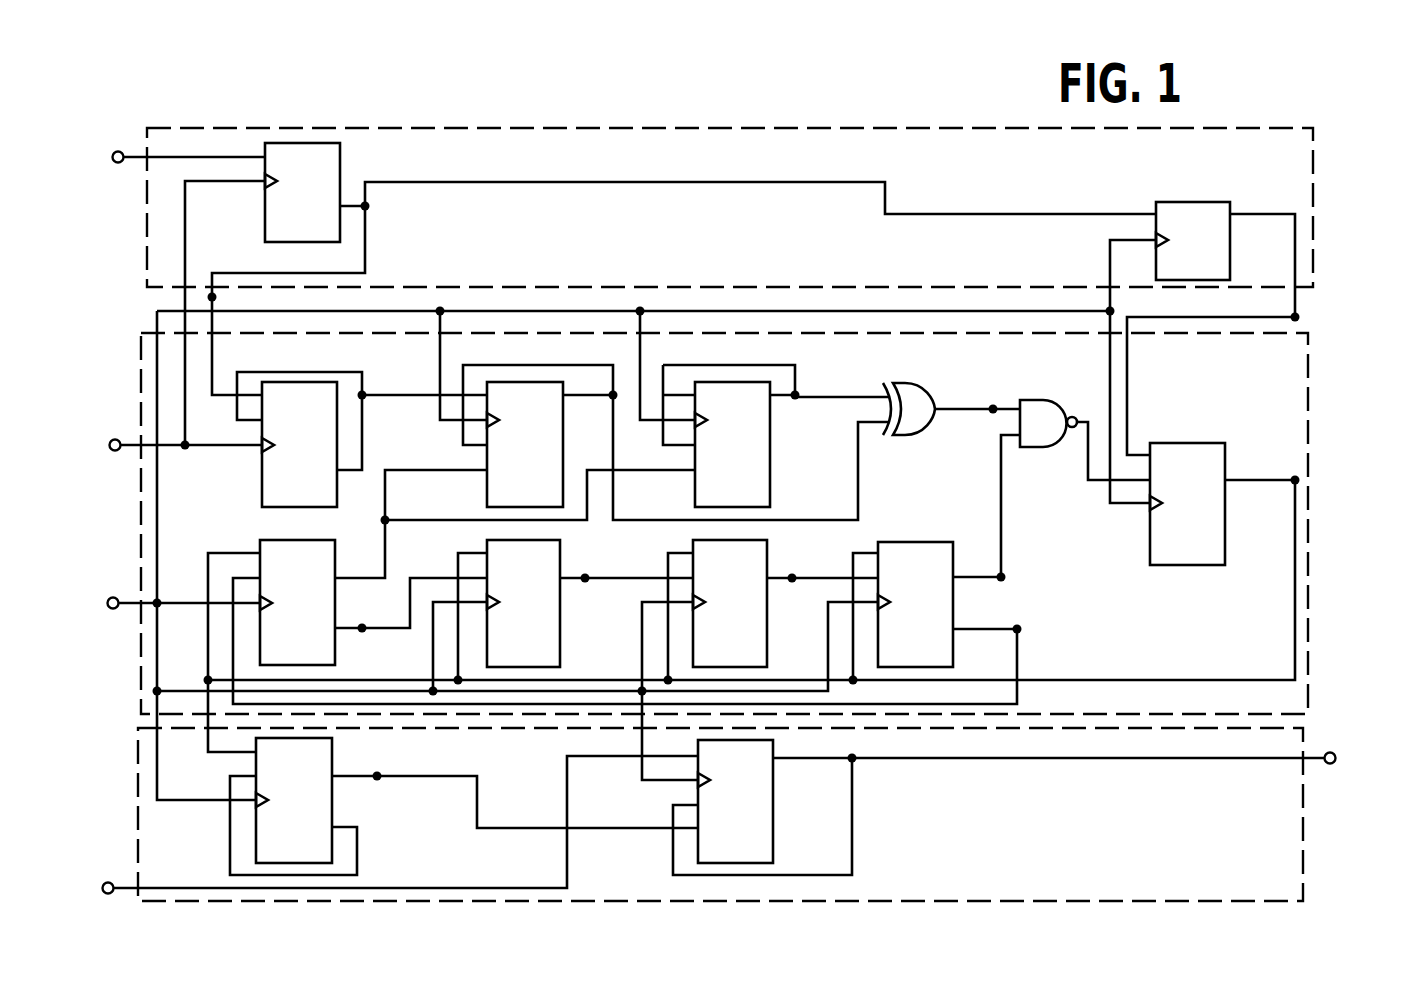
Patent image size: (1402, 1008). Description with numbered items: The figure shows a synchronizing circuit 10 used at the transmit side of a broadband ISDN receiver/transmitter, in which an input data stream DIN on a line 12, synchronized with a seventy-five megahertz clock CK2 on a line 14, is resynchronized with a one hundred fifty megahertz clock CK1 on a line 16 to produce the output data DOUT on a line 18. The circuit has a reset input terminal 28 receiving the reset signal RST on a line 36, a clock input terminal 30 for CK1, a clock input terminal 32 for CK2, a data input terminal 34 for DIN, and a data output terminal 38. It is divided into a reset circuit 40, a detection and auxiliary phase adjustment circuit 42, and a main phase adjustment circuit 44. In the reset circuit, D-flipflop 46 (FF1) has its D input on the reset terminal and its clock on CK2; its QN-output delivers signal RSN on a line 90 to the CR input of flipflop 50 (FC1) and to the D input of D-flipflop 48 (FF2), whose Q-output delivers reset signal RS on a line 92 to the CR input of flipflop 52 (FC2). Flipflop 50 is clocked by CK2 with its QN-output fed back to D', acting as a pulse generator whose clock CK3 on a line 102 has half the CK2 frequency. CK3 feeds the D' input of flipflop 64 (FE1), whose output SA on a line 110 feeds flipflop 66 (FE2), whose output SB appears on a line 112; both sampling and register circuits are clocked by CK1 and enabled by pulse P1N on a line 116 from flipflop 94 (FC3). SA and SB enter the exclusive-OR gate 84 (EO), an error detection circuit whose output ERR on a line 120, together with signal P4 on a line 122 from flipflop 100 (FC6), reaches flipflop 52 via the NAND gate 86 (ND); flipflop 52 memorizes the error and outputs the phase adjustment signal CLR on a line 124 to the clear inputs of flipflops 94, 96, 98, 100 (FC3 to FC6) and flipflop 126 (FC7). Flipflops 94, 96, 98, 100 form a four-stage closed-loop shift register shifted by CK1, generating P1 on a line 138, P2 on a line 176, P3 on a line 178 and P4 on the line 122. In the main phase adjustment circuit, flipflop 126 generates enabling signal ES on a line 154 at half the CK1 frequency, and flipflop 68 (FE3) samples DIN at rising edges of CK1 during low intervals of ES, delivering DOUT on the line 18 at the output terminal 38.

The synchronizing circuit 10 is at (157, 126).
The line 12 is at (123, 884).
The line 14 is at (130, 441).
The line 16 is at (122, 598).
The line 18 is at (1313, 770).
The reset input terminal 28 is at (113, 165).
The clock input terminal CK1 30 is at (111, 609).
The clock input terminal CK2 32 is at (113, 453).
The data input terminal 34 is at (104, 884).
The line 36 is at (137, 155).
The data output terminal 38 is at (1334, 755).
The reset circuit 40 is at (880, 128).
The detection and auxiliary phase adjustment circuit 42 is at (141, 368).
The main phase adjustment circuit 44 is at (1303, 818).
The D-flipflop 46 is at (340, 160).
The D-flipflop 48 is at (1230, 270).
The D-flipflop with clear port 50 is at (262, 476).
The D-flipflop with clear port 52 is at (1150, 537).
The D-flipflop with internal multiplexer 64 is at (487, 478).
The D-flipflop with internal multiplexer 66 is at (695, 487).
The D-flipflop with internal multiplexer 68 is at (773, 824).
The exclusive-OR gate 84 is at (918, 432).
The NAND gate 86 is at (1050, 448).
The line 90 is at (488, 184).
The reset signal RS 92 is at (1290, 213).
The D-flipflop 94 is at (268, 538).
The D-flipflop 96 is at (560, 658).
The D-flipflop 98 is at (767, 658).
The D-flipflop 100 is at (953, 657).
The line 102 is at (406, 396).
The line 110 is at (598, 398).
The line 112 is at (870, 397).
The line 116 is at (390, 523).
The line 120 is at (997, 407).
The line 122 is at (1001, 545).
The line 124 is at (1291, 485).
The D-flipflop 126 is at (332, 807).
The line 138 is at (364, 632).
The line 154 is at (418, 781).
The line 176 is at (586, 582).
The line 178 is at (792, 582).